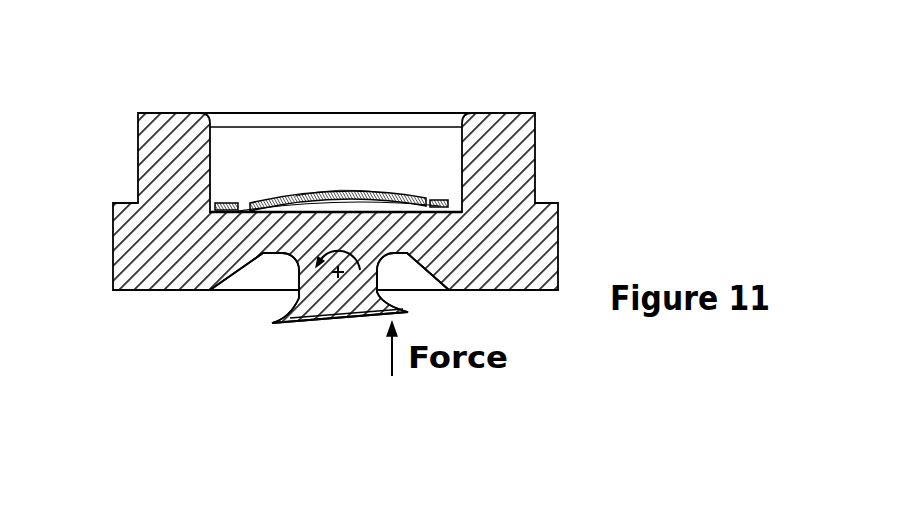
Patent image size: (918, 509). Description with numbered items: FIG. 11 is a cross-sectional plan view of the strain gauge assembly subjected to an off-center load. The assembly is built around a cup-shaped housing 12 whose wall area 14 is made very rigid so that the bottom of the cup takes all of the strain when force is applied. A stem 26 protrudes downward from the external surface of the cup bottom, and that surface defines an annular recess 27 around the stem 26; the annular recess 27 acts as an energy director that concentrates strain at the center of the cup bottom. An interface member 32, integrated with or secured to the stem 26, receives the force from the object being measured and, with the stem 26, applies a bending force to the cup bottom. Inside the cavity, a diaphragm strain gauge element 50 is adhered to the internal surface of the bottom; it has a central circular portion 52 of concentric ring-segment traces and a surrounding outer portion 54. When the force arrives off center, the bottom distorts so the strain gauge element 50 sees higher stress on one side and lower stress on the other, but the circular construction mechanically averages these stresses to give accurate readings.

The housing 12 is at (402, 227).
The wall area 14 is at (380, 218).
The stem 26 is at (518, 249).
The annular recess 27 is at (207, 308).
The interface member 32 is at (313, 348).
The strain gauge element 50 is at (339, 114).
The circular portion 52 is at (267, 115).
The outer portion 54 is at (292, 135).